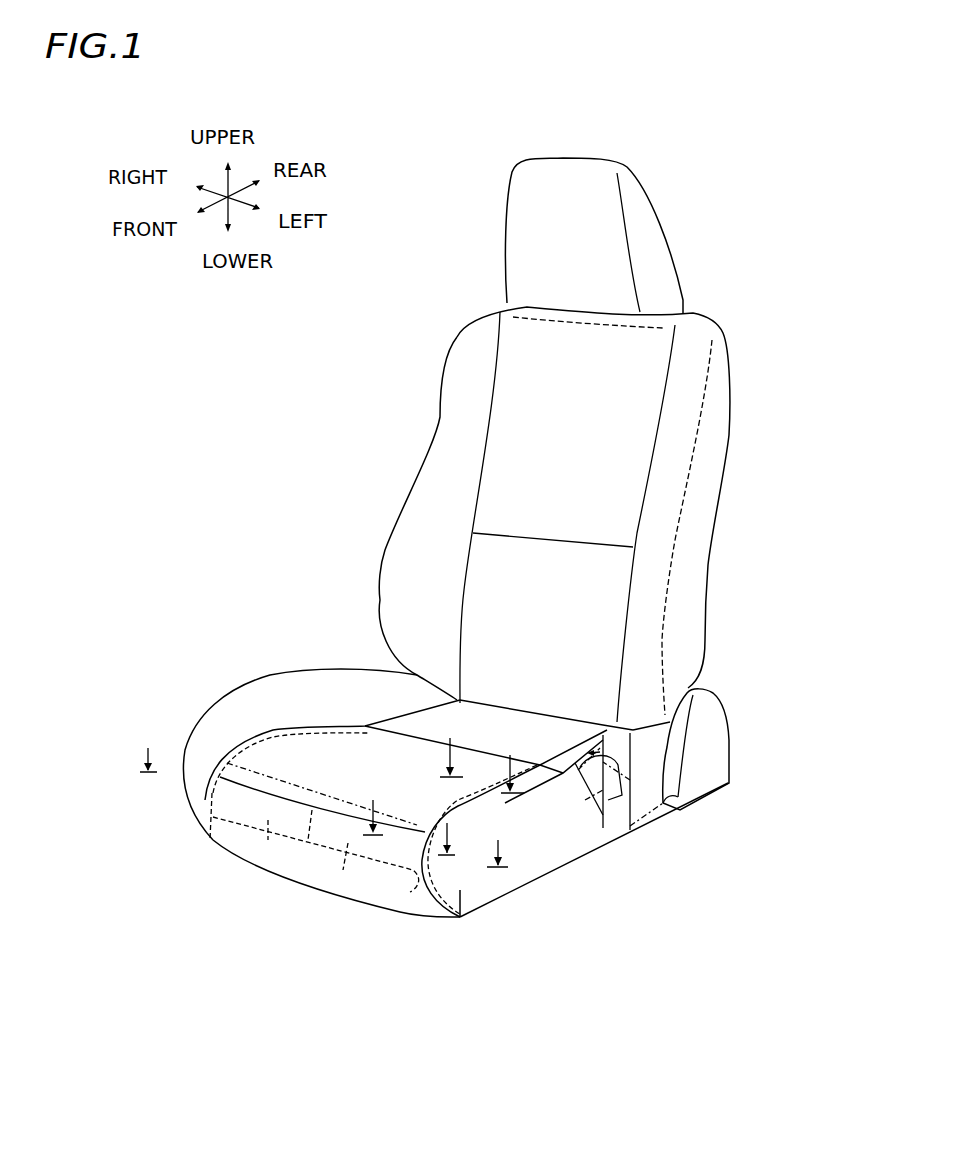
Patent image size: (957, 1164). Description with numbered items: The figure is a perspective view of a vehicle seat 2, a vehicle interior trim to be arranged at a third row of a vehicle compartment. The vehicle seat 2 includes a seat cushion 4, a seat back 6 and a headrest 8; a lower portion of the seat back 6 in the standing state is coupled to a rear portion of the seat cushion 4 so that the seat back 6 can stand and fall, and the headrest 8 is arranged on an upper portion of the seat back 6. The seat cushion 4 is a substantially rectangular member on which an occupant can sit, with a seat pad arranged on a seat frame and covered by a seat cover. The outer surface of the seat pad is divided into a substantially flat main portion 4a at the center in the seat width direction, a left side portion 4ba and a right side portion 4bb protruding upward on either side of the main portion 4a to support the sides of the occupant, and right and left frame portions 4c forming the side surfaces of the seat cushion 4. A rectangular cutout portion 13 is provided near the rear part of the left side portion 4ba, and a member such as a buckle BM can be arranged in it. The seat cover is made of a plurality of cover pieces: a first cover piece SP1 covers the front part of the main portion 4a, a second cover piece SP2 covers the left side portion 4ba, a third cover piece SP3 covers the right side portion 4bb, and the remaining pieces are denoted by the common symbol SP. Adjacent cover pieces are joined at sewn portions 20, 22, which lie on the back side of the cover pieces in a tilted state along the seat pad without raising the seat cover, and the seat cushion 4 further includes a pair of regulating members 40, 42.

The vehicle seat 2 is at (703, 186).
The headrest 8 is at (507, 257).
The seat back 6 is at (441, 401).
The seat cushion 4 is at (259, 675).
The cutout portion 13 is at (603, 740).
The right side portion 4bb is at (316, 711).
The main portion 4a is at (344, 774).
The left side portion 4ba is at (498, 821).
The frame portion 4c is at (573, 831).
The cover piece SP is at (487, 727).
The first cover piece SP1 is at (370, 753).
The second cover piece SP2 is at (450, 877).
The third cover piece SP3 is at (205, 740).
The sewn portion 22 is at (210, 843).
The regulating member 42 is at (262, 850).
The regulating member 40 is at (336, 875).
The sewn portion 20 is at (413, 887).
The buckle BM is at (687, 805).